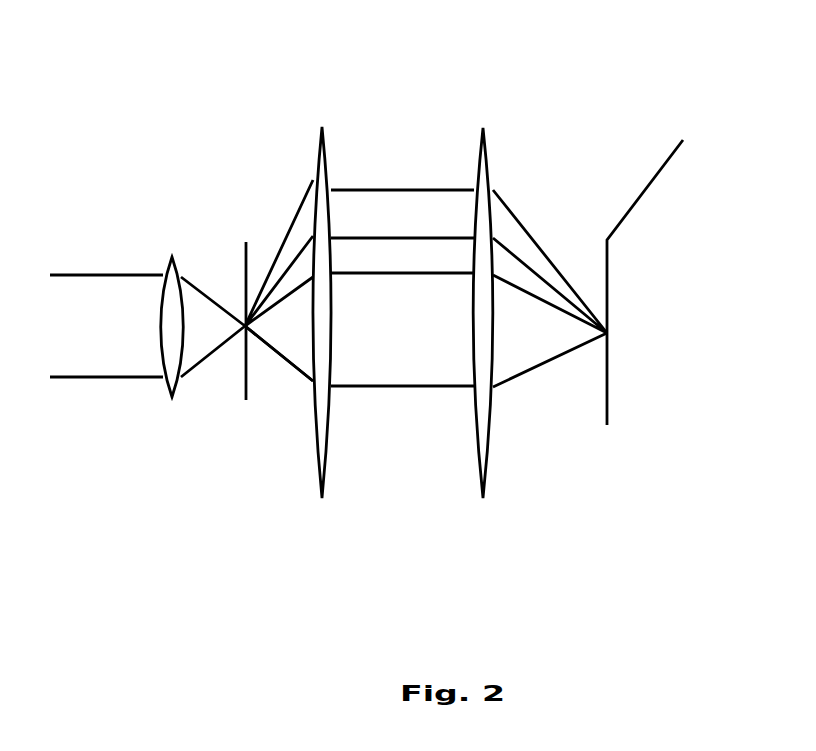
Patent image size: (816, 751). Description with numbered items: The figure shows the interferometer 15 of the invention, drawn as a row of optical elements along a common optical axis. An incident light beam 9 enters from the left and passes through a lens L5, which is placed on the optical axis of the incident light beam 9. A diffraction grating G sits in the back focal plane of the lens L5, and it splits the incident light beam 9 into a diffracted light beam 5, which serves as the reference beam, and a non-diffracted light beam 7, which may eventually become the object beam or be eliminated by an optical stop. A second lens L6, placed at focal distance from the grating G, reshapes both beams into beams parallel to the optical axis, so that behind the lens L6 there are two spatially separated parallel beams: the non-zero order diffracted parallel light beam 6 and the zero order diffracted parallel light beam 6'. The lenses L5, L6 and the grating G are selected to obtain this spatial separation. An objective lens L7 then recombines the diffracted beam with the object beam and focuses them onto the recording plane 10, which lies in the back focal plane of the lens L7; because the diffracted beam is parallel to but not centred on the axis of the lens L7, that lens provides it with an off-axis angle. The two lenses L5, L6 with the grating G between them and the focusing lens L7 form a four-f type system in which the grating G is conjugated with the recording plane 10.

The incident light beam 9 is at (103, 273).
The lens L5 is at (172, 258).
The diffracted light beam 5 is at (292, 223).
The non-diffracted light beam 7 is at (286, 365).
The grating G is at (246, 400).
The lens L6 is at (322, 128).
The non-zero order diffracted parallel light beam 6 is at (402, 186).
The zero order diffracted parallel light beam 6' is at (402, 486).
The objective lens L7 is at (487, 125).
The recording plane 10 is at (609, 259).
The interferometer of the invention 15 is at (595, 530).